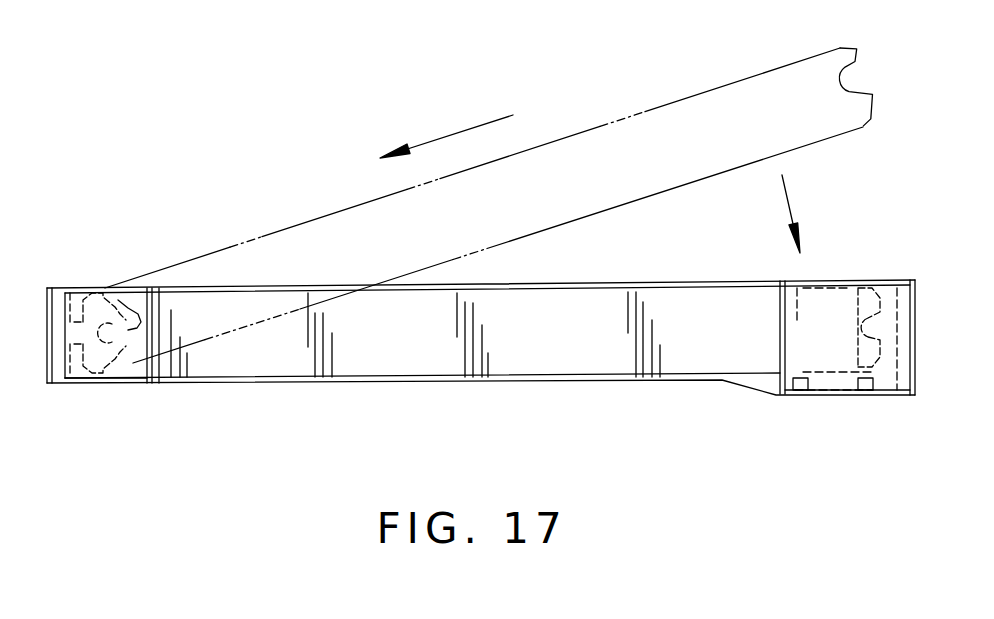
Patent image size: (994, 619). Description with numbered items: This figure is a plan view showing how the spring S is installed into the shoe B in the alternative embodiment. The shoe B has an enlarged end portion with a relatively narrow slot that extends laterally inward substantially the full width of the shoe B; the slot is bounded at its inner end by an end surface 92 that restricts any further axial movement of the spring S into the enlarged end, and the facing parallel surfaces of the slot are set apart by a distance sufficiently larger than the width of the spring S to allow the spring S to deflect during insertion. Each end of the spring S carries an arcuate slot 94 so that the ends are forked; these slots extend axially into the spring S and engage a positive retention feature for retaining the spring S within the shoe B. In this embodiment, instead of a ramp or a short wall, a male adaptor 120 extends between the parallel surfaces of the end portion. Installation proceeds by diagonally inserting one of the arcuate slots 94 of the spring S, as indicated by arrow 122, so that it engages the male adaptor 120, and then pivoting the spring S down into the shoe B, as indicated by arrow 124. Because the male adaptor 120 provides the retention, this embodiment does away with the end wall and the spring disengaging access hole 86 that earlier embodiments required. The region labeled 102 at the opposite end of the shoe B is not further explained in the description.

The shoe B is at (318, 378).
The spring S is at (502, 352).
The arrow 122 is at (437, 138).
The arrow 124 is at (793, 203).
The end surface 92 is at (73, 290).
The spring disengaging access hole 86 is at (87, 290).
The arcuate slot 94 is at (128, 290).
The male adaptor 120 is at (105, 380).
The right end hook 102 is at (888, 282).